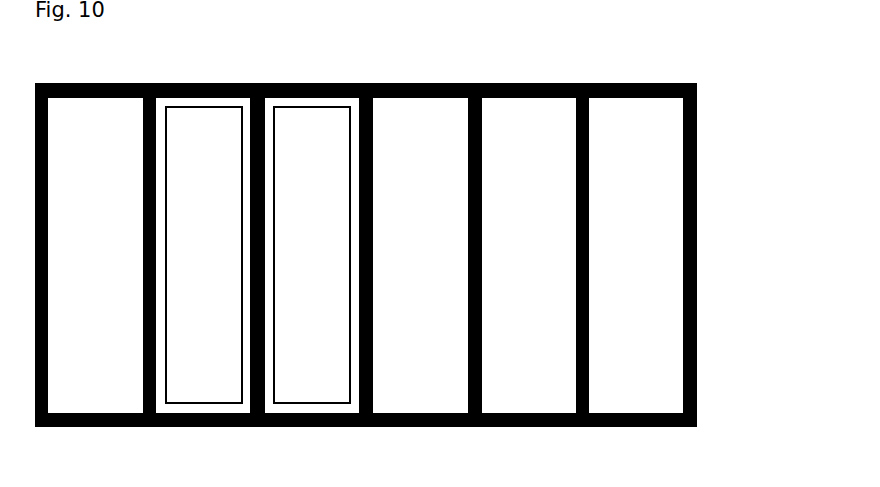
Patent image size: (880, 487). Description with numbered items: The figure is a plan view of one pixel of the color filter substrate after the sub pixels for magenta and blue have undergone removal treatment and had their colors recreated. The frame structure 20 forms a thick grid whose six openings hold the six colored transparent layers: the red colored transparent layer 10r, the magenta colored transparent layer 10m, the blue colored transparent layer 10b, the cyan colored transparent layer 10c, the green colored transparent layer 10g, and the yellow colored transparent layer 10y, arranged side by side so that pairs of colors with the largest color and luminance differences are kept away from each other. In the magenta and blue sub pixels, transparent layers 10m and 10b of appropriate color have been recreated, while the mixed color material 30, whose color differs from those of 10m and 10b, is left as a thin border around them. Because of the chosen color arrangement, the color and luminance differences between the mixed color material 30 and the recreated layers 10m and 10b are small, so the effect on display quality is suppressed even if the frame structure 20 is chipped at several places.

The frame structure 20 is at (697, 385).
The red colored transparent layer 10r is at (94, 395).
The magenta colored transparent layer 10m is at (201, 392).
The blue colored transparent layer 10b is at (307, 392).
The cyan colored transparent layer 10c is at (413, 395).
The green colored transparent layer 10g is at (527, 398).
The yellow colored transparent layer 10y is at (635, 398).
The mixed color material 30 is at (203, 107).